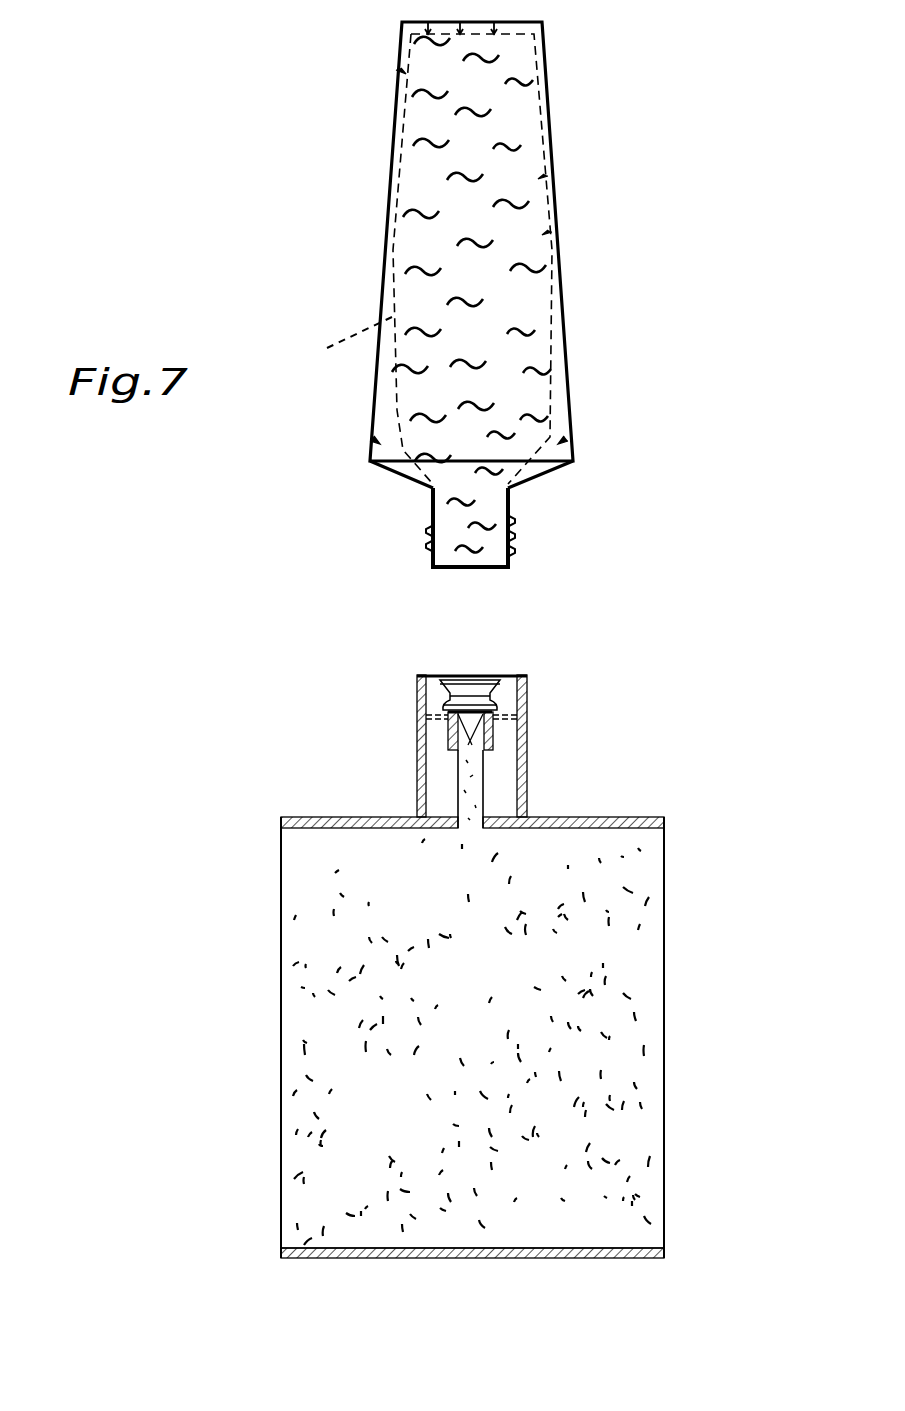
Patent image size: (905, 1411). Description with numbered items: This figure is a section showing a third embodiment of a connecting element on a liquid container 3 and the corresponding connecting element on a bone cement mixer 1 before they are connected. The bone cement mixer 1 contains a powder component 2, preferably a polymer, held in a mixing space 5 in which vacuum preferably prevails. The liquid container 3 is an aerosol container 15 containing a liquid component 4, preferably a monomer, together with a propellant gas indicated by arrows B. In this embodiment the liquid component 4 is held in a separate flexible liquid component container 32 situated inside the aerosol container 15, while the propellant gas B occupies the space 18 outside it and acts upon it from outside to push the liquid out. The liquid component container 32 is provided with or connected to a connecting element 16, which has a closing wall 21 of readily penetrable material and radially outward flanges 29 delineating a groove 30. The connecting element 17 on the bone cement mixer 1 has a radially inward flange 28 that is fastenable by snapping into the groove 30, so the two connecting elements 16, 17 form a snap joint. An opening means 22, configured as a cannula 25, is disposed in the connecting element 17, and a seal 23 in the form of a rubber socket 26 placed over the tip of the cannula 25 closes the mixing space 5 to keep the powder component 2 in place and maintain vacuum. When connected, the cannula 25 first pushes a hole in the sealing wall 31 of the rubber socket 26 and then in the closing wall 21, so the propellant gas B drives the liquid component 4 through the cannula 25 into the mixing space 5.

The bone cement mixer 1 is at (514, 1037).
The powder component 2 is at (628, 1027).
The liquid container 3 is at (342, 190).
The liquid component 4 is at (525, 142).
The mixing space 5 is at (625, 1248).
The aerosol container 15 is at (383, 158).
The connecting element 16 is at (496, 554).
The connecting element 17 is at (493, 709).
The space 18 is at (550, 231).
The closing wall 21 is at (460, 568).
The opening means 22 is at (455, 778).
The seal 23 is at (498, 674).
The cannula 25 is at (458, 750).
The rubber socket 26 is at (497, 690).
The flange 28 is at (498, 740).
The flanges 29 is at (433, 528).
The groove 30 is at (432, 545).
The sealing wall 31 is at (443, 717).
The liquid component container 32 is at (331, 345).
The propellant gas arrows B is at (398, 33).